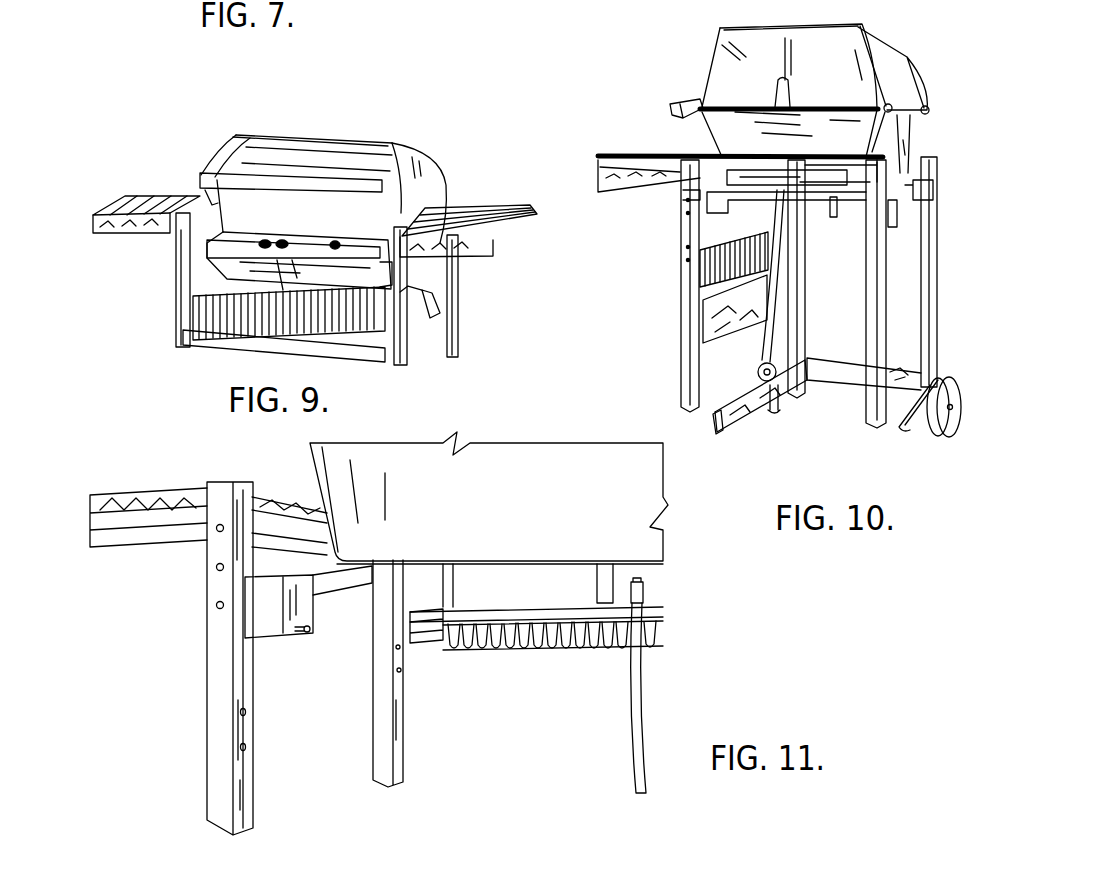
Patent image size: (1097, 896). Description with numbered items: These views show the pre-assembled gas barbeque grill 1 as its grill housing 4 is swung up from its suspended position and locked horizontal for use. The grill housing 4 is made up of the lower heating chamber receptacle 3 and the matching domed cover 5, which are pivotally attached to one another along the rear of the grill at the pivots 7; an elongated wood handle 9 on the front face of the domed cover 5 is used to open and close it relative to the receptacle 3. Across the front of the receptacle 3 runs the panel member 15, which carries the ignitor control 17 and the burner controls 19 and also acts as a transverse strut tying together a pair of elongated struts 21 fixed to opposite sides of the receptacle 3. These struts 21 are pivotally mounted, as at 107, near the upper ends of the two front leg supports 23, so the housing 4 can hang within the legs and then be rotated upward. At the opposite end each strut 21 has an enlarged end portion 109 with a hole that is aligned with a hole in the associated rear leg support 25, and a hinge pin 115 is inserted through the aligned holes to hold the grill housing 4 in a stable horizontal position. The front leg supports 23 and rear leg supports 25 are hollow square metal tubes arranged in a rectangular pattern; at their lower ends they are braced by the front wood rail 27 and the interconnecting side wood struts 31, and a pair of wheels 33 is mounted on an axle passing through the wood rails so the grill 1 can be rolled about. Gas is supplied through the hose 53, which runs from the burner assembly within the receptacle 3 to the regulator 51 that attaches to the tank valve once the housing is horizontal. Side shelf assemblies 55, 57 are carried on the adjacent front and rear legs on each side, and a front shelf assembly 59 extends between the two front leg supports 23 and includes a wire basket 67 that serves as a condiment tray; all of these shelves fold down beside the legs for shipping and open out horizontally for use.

In FIG. 9, the gas barbeque grill 1 is at (437, 128).
In FIG. 10, the gas barbeque grill 1 is at (911, 44).
In FIG. 11, the gas barbeque grill 1 is at (465, 710).
In FIG. 9, the heating chamber receptacle 3 is at (408, 214).
In FIG. 10, the heating chamber receptacle 3 is at (735, 132).
In FIG. 11, the heating chamber receptacle 3 is at (621, 495).
In FIG. 9, the grill housing 4 is at (448, 177).
In FIG. 10, the grill housing 4 is at (686, 77).
In FIG. 9, the domed cover 5 is at (420, 174).
In FIG. 10, the domed cover 5 is at (737, 58).
In FIG. 10, the pivotal attachment 7 is at (890, 104).
In FIG. 9, the wood handle 9 is at (208, 172).
In FIG. 10, the wood handle 9 is at (682, 106).
In FIG. 9, the panel member 15 is at (192, 248).
In FIG. 9, the ignitor control 17 is at (338, 240).
In FIG. 9, the burner controls 19 is at (298, 225).
In FIG. 9, the elongated struts 21 is at (382, 270).
In FIG. 10, the elongated struts 21 is at (833, 205).
In FIG. 11, the elongated struts 21 is at (317, 592).
In FIG. 9, the front leg supports 23 is at (178, 280).
In FIG. 10, the front leg supports 23 is at (681, 388).
In FIG. 11, the front leg supports 23 is at (373, 750).
In FIG. 9, the rear leg supports 25 is at (461, 326).
In FIG. 10, the rear leg supports 25 is at (944, 245).
In FIG. 11, the rear leg supports 25 is at (207, 747).
In FIG. 10, the front wood rail 27 is at (722, 431).
In FIG. 10, the side wood struts 31 is at (905, 377).
In FIG. 10, the wheels 33 is at (935, 433).
In FIG. 10, the regulator 51 is at (757, 372).
In FIG. 10, the hose 53 is at (764, 340).
In FIG. 11, the hose 53 is at (632, 766).
In FIG. 9, the side shelf assembly 55 is at (124, 201).
In FIG. 9, the side shelf assembly 57 is at (500, 243).
In FIG. 9, the front shelf assembly 59 is at (224, 352).
In FIG. 10, the front shelf assembly 59 is at (679, 348).
In FIG. 9, the wire basket 67 is at (210, 308).
In FIG. 10, the wire basket 67 is at (710, 242).
In FIG. 11, the wire basket 67 is at (496, 652).
In FIG. 9, the pivots 107 is at (408, 292).
In FIG. 10, the pivots 107 is at (686, 200).
In FIG. 11, the enlarged end portion 109 is at (266, 622).
In FIG. 11, the hinge pin 115 is at (308, 634).